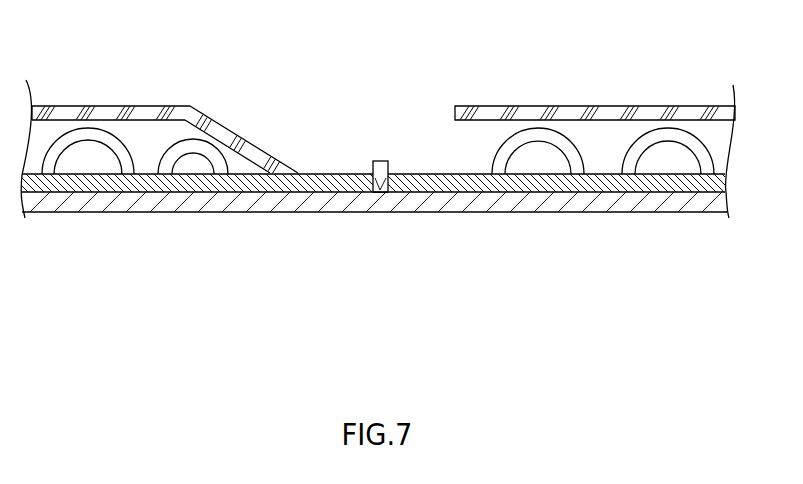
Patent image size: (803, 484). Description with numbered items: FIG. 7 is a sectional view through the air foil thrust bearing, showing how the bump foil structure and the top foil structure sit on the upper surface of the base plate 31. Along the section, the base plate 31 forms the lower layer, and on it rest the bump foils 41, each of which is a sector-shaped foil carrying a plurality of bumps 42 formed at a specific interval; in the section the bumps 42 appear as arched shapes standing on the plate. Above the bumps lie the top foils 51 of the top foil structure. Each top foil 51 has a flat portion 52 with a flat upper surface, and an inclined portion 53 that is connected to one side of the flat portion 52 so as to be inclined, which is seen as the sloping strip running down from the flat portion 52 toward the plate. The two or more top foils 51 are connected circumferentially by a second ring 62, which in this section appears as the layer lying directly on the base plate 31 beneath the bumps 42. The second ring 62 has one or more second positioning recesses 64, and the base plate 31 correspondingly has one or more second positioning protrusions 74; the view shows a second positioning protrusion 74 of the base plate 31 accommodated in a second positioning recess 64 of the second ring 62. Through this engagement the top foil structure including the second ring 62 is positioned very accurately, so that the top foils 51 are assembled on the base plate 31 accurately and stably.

The base plate 31 is at (526, 200).
The bump foil 41 is at (145, 158).
The bump 42 is at (88, 132).
The top foil 51 is at (133, 97).
The flat portion 52 is at (52, 106).
The inclined portion 53 is at (252, 147).
The second ring 62 is at (326, 188).
The second positioning recess 64 is at (379, 192).
The second positioning protrusion 74 is at (380, 160).